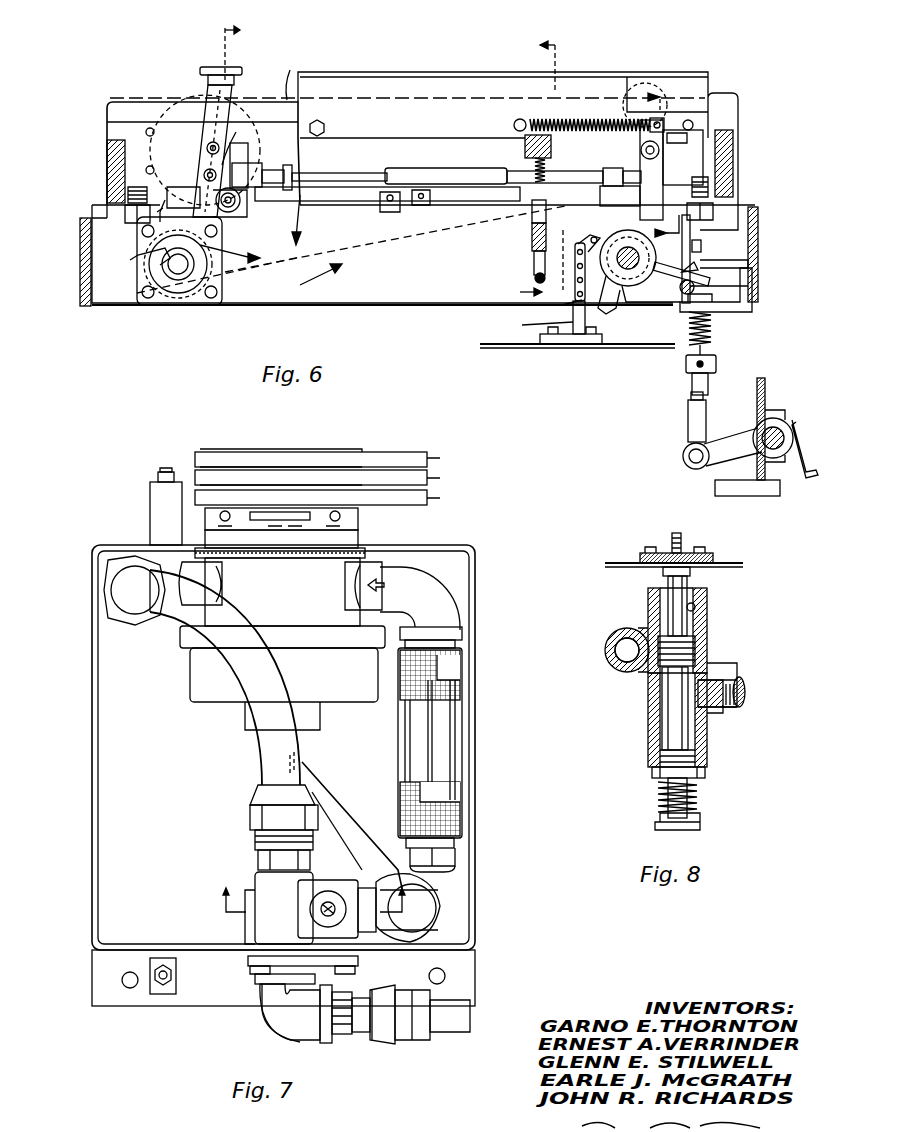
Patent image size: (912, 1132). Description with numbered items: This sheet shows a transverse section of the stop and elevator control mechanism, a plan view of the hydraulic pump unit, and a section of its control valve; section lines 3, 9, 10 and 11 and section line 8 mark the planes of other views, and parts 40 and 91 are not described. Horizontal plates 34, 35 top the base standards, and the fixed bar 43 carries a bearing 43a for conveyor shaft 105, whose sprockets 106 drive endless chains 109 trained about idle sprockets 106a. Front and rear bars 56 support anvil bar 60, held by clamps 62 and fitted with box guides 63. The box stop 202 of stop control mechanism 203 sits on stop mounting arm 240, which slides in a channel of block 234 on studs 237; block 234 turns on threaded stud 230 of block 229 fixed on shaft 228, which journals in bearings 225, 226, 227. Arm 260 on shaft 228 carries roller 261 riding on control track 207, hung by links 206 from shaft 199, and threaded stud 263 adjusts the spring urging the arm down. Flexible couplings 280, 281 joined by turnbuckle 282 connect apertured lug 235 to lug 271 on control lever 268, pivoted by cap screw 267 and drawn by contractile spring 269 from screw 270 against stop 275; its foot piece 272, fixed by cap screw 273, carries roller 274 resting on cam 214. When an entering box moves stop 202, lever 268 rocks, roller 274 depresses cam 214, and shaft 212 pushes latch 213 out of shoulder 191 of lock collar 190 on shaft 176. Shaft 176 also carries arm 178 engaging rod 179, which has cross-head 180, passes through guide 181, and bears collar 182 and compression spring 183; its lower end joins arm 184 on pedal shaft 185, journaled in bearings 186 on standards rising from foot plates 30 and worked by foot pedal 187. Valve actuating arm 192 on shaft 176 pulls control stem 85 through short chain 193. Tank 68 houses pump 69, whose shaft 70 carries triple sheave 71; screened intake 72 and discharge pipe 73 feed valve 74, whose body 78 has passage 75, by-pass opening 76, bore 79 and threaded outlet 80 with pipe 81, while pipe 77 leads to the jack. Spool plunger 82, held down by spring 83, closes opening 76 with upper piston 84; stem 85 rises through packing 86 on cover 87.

In FIG. 6, the section line 3 is at (531, 172).
In FIG. 7, the section line 8 is at (324, 908).
In FIG. 6, the section line 9 is at (230, 143).
In FIG. 6, the section line 10 is at (209, 231).
In FIG. 6, the section line 11 is at (667, 161).
In FIG. 6, the foot plates 30 is at (746, 496).
In FIG. 6, the horizontal plate 34 is at (82, 268).
In FIG. 6, the horizontal plate 35 is at (760, 244).
In FIG. 7, the panel 40 is at (90, 870).
In FIG. 6, the fixed bar 43 is at (350, 295).
In FIG. 6, the bearing 43a is at (180, 303).
In FIG. 6, the front and rear bars 56 is at (106, 172).
In FIG. 6, the anvil bar 60 is at (108, 128).
In FIG. 6, the clamps 62 is at (125, 215).
In FIG. 6, the box guides 63 is at (462, 78).
In FIG. 7, the rectangular tank 68 is at (476, 882).
In FIG. 7, the pump 69 is at (205, 683).
In FIG. 7, the pump shaft 70 is at (306, 540).
In FIG. 7, the triple sheave 71 is at (280, 452).
In FIG. 7, the screened suction intake 72 is at (428, 588).
In FIG. 7, the discharge pipe 73 is at (268, 762).
In FIG. 7, the valve 74 is at (246, 884).
In FIG. 8, the valve 74 is at (640, 692).
In FIG. 8, the valve passage 75 is at (620, 652).
In FIG. 8, the by-pass opening 76 is at (648, 642).
In FIG. 7, the pipe 77 is at (432, 1025).
In FIG. 8, the valve body 78 is at (708, 615).
In FIG. 8, the vertical valve bore 79 is at (708, 600).
In FIG. 8, the threaded by-pass outlet opening 80 is at (732, 682).
In FIG. 7, the pipe 81 is at (356, 830).
In FIG. 8, the pipe 81 is at (744, 705).
In FIG. 8, the spool plunger 82 is at (672, 720).
In FIG. 8, the spring 83 is at (698, 796).
In FIG. 8, the upper piston 84 is at (706, 648).
In FIG. 6, the control stem 85 is at (536, 325).
In FIG. 7, the control stem 85 is at (322, 912).
In FIG. 8, the control stem 85 is at (680, 534).
In FIG. 6, the packing 86 is at (540, 340).
In FIG. 8, the packing 86 is at (714, 556).
In FIG. 6, the cover 87 is at (505, 348).
In FIG. 8, the cover 87 is at (745, 562).
In FIG. 7, the fins 91 is at (440, 498).
In FIG. 6, the shaft 105 is at (175, 265).
In FIG. 6, the sprockets 106 is at (351, 249).
In FIG. 6, the idle sprockets 106a is at (712, 92).
In FIG. 6, the endless chains 109 is at (303, 77).
In FIG. 6, the shaft 176 is at (596, 296).
In FIG. 6, the arm 178 is at (749, 284).
In FIG. 6, the rod 179 is at (692, 385).
In FIG. 6, the cross-head 180 is at (749, 264).
In FIG. 6, the apertured guide 181 is at (760, 308).
In FIG. 6, the collar 182 is at (716, 362).
In FIG. 6, the compression spring 183 is at (712, 340).
In FIG. 6, the arm 184 is at (720, 456).
In FIG. 6, the pedal shaft 185 is at (760, 430).
In FIG. 6, the bearings 186 is at (772, 418).
In FIG. 6, the foot pedal 187 is at (808, 472).
In FIG. 6, the lock collar 190 is at (626, 242).
In FIG. 6, the lock shoulder 191 is at (634, 306).
In FIG. 6, the valve actuating arm 192 is at (590, 238).
In FIG. 6, the short chain 193 is at (570, 302).
In FIG. 6, the shaft 199 is at (534, 279).
In FIG. 6, the box stop 202 is at (212, 70).
In FIG. 6, the stop control mechanism 203 is at (295, 282).
In FIG. 6, the links 206 is at (534, 262).
In FIG. 6, the control track 207 is at (532, 240).
In FIG. 6, the shaft 212 is at (614, 318).
In FIG. 6, the latch 213 is at (655, 282).
In FIG. 6, the cam 214 is at (696, 288).
In FIG. 6, the bearing 225 is at (170, 178).
In FIG. 6, the bearing 226 is at (400, 210).
In FIG. 6, the bearing 227 is at (552, 142).
In FIG. 6, the shaft 228 is at (370, 202).
In FIG. 6, the block 229 is at (218, 222).
In FIG. 6, the threaded stud 230 is at (230, 212).
In FIG. 6, the block 234 is at (238, 132).
In FIG. 6, the apertured lug 235 is at (245, 150).
In FIG. 6, the stud 237 is at (210, 145).
In FIG. 6, the stop mounting arm 240 is at (215, 92).
In FIG. 6, the arm 260 is at (516, 185).
In FIG. 6, the roller 261 is at (532, 212).
In FIG. 6, the threaded stud 263 is at (557, 168).
In FIG. 6, the cap screw 267 is at (658, 153).
In FIG. 6, the control lever 268 is at (660, 140).
In FIG. 6, the contractile spring 269 is at (636, 96).
In FIG. 6, the screw 270 is at (517, 120).
In FIG. 6, the lug 271 is at (640, 207).
In FIG. 6, the foot piece 272 is at (673, 259).
In FIG. 6, the cap screw 273 is at (702, 250).
In FIG. 6, the roller 274 is at (698, 266).
In FIG. 6, the stop 275 is at (668, 168).
In FIG. 6, the flexible coupling 280 is at (252, 175).
In FIG. 6, the flexible coupling 281 is at (644, 168).
In FIG. 6, the turnbuckle 282 is at (448, 178).